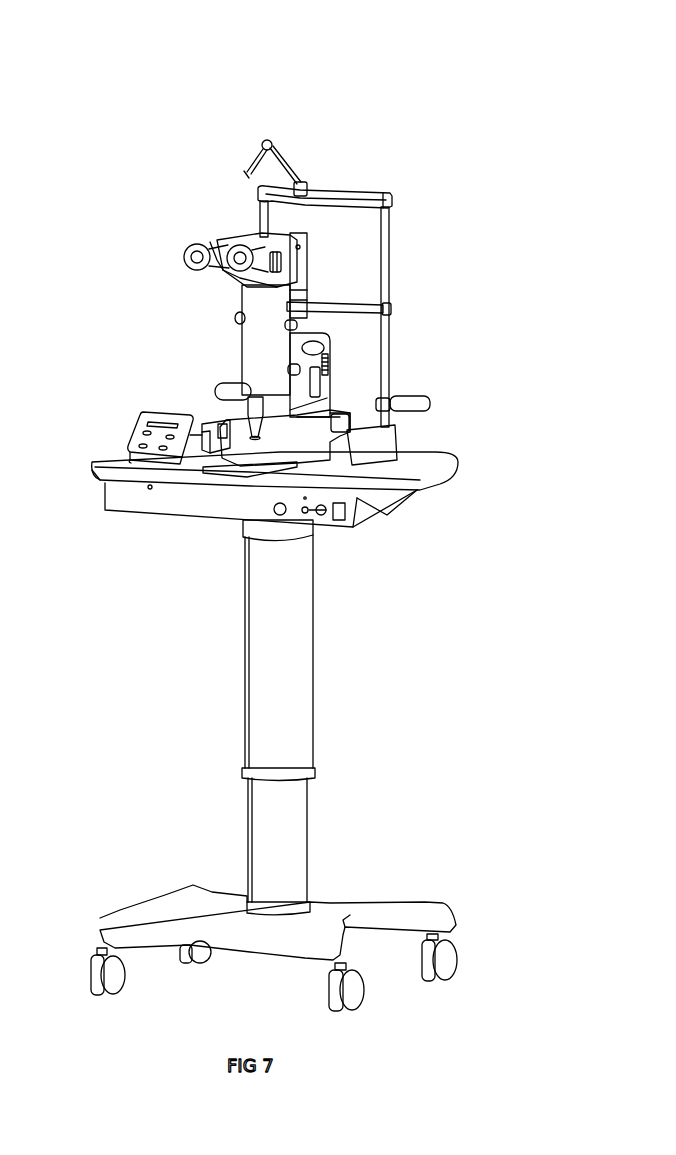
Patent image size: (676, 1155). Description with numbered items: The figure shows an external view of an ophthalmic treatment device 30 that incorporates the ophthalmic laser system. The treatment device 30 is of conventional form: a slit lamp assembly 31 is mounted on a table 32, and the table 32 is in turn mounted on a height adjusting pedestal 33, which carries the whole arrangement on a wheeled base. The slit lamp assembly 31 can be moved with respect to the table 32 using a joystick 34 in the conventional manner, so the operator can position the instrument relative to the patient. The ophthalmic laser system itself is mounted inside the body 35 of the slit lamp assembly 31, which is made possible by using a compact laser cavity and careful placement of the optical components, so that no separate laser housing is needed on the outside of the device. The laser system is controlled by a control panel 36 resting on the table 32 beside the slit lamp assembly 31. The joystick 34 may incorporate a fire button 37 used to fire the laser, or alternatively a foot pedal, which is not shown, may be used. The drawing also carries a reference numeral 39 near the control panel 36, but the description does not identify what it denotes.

The slit lamp apparatus 30 is at (420, 136).
The binocular microscope 31 is at (307, 248).
The table 32 is at (453, 457).
The column 33 is at (315, 677).
The test object 34 is at (250, 425).
The slit lamp body 35 is at (238, 308).
The control unit 36 is at (133, 430).
The operating handle 37 is at (217, 390).
The display 39 is at (146, 428).